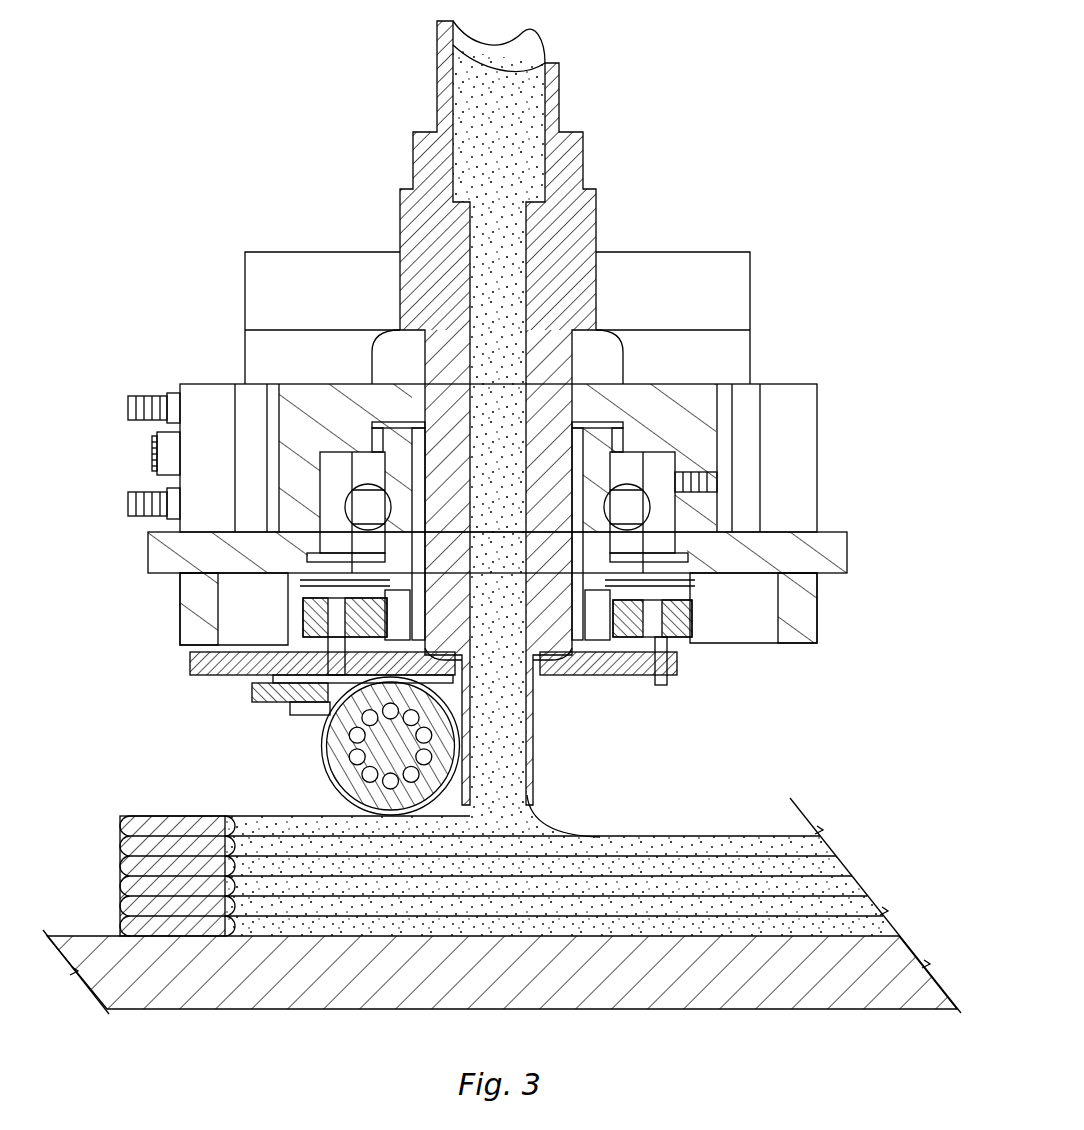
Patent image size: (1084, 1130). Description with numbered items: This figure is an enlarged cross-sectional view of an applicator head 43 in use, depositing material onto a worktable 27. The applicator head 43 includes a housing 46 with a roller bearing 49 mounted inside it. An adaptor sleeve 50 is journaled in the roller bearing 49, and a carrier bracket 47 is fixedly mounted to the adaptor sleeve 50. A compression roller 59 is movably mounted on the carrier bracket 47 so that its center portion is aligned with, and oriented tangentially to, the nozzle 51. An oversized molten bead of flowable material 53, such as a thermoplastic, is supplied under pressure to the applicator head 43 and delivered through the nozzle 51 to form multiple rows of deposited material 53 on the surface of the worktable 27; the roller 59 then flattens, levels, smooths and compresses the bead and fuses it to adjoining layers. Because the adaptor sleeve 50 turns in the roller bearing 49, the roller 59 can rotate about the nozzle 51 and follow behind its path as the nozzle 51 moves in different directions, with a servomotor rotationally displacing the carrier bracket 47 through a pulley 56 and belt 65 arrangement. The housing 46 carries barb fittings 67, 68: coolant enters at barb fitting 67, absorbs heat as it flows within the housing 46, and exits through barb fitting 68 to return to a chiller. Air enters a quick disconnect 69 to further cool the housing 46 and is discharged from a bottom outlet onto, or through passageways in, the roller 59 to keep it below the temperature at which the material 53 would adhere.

The worktable 27 is at (640, 1009).
The applicator head 43 is at (842, 461).
The housing 46 is at (208, 384).
The carrier bracket 47 is at (190, 661).
The roller bearing 49 is at (662, 467).
The adaptor sleeve 50 is at (585, 542).
The nozzle 51 is at (413, 163).
The flowable material 53 is at (523, 33).
The pulley 56 is at (686, 639).
The compression roller 59 is at (323, 757).
The belt 65 is at (693, 618).
The barb fitting 67 is at (128, 405).
The barb fitting 68 is at (128, 501).
The quick disconnect 69 is at (152, 455).